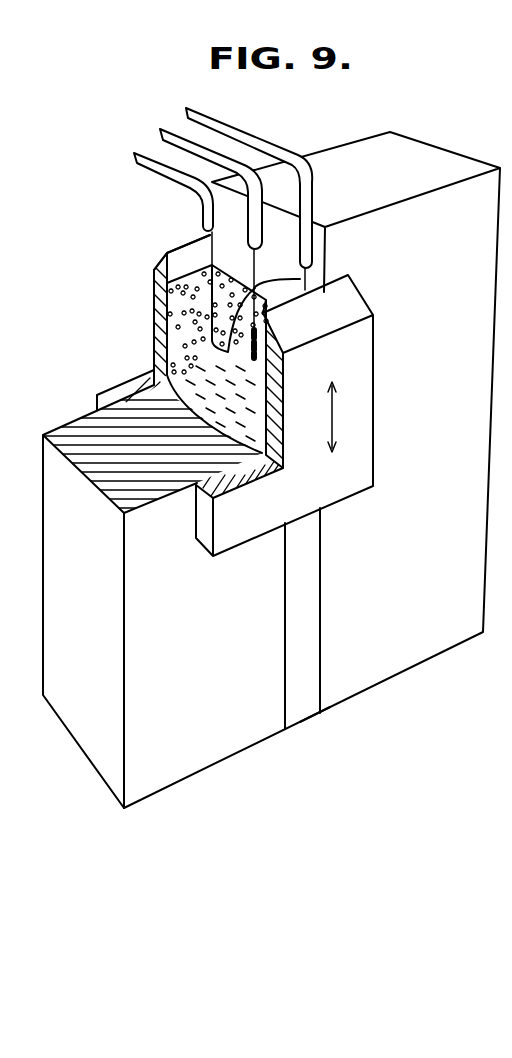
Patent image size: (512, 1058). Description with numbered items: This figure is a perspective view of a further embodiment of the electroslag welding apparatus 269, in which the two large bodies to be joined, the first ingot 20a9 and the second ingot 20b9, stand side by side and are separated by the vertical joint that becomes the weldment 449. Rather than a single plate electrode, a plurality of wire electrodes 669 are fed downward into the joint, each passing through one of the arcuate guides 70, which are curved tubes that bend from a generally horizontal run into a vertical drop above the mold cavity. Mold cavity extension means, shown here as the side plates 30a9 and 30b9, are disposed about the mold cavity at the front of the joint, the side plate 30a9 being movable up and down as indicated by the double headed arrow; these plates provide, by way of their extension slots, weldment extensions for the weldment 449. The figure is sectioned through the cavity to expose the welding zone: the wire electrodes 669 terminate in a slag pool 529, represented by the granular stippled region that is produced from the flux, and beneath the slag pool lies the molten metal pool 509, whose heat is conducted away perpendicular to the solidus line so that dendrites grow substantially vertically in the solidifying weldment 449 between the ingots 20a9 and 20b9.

The arcuate guides 70 is at (140, 153).
The side plate 30b9 is at (165, 248).
The slag pool 529 is at (187, 296).
The molten metal pool 509 is at (180, 373).
The wire electrodes 669 is at (220, 344).
The side plate 30a9 is at (367, 417).
The first ingot 20a9 is at (226, 641).
The second ingot 20b9 is at (423, 601).
The weldment 449 is at (305, 712).
The electroslag welding apparatus 269 is at (386, 699).